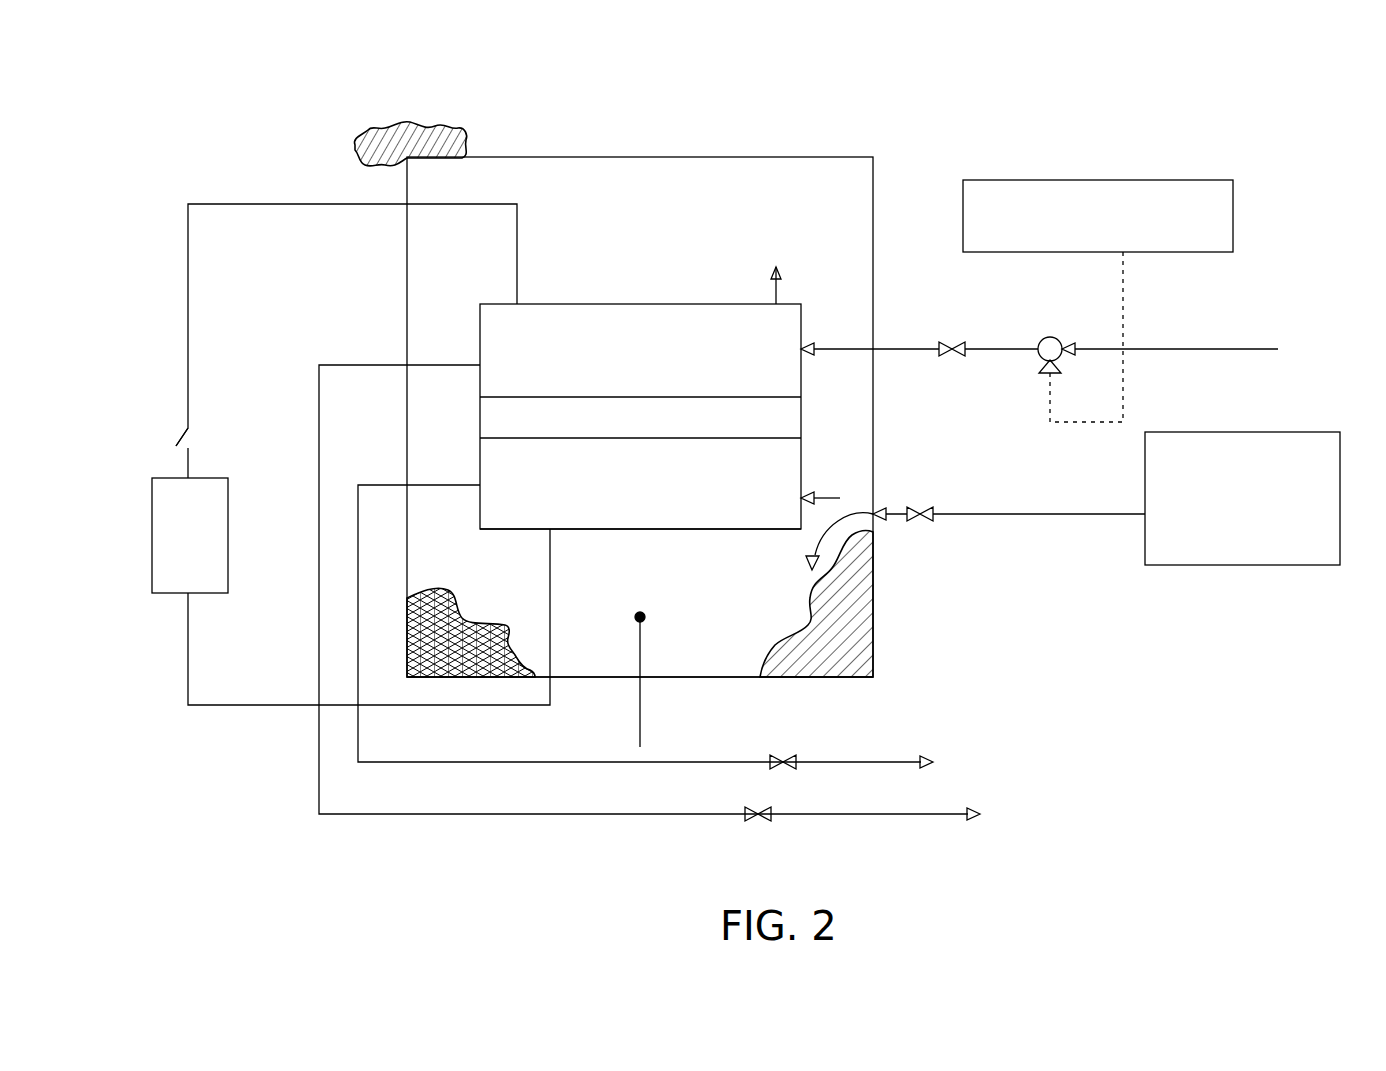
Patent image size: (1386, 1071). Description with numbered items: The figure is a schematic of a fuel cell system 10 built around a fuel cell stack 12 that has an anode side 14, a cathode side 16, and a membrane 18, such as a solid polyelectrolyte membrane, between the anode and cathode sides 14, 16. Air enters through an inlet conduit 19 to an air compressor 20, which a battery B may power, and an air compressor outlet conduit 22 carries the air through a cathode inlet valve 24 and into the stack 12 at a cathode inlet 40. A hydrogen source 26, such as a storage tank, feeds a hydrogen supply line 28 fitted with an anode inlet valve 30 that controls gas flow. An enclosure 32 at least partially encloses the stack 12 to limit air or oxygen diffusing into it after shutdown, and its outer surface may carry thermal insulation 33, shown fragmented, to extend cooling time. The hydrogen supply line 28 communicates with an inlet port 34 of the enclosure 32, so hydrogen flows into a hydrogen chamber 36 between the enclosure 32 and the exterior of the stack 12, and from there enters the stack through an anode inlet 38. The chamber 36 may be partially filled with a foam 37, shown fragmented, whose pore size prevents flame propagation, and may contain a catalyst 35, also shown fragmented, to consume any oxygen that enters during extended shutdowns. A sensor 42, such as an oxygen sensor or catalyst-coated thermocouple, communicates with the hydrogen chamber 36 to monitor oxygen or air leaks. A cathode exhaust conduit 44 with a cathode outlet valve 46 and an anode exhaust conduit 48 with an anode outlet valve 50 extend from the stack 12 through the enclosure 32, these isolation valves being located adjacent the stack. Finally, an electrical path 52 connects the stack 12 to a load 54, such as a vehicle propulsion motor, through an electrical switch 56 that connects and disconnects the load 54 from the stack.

The fuel cell system 10 is at (605, 90).
The fuel cell stack 12 is at (690, 637).
The anode side 14 is at (580, 538).
The cathode side 16 is at (650, 304).
The membrane 18 is at (786, 411).
The inlet conduit 19 is at (1243, 349).
The air compressor 20 is at (1079, 337).
The air compressor outlet conduit 22 is at (1003, 349).
The cathode inlet valve 24 is at (938, 336).
The hydrogen source 26 is at (1217, 565).
The hydrogen supply line 28 is at (1045, 514).
The anode inlet valve 30 is at (924, 498).
The enclosure 32 is at (680, 157).
The thermal insulation 33 is at (408, 125).
The inlet port 34 is at (873, 516).
The catalyst 35 is at (533, 675).
The hydrogen chamber 36 is at (716, 599).
The foam 37 is at (865, 620).
The anode inlet 38 is at (801, 497).
The cathode inlet 40 is at (873, 349).
The sensor 42 is at (636, 688).
The cathode exhaust conduit 44 is at (320, 428).
The cathode outlet valve 46 is at (752, 822).
The anode exhaust conduit 48 is at (358, 718).
The anode outlet valve 50 is at (788, 738).
The electrical path 52 is at (305, 204).
The load 54 is at (228, 523).
The electrical switch 56 is at (188, 448).
The battery B is at (1100, 180).